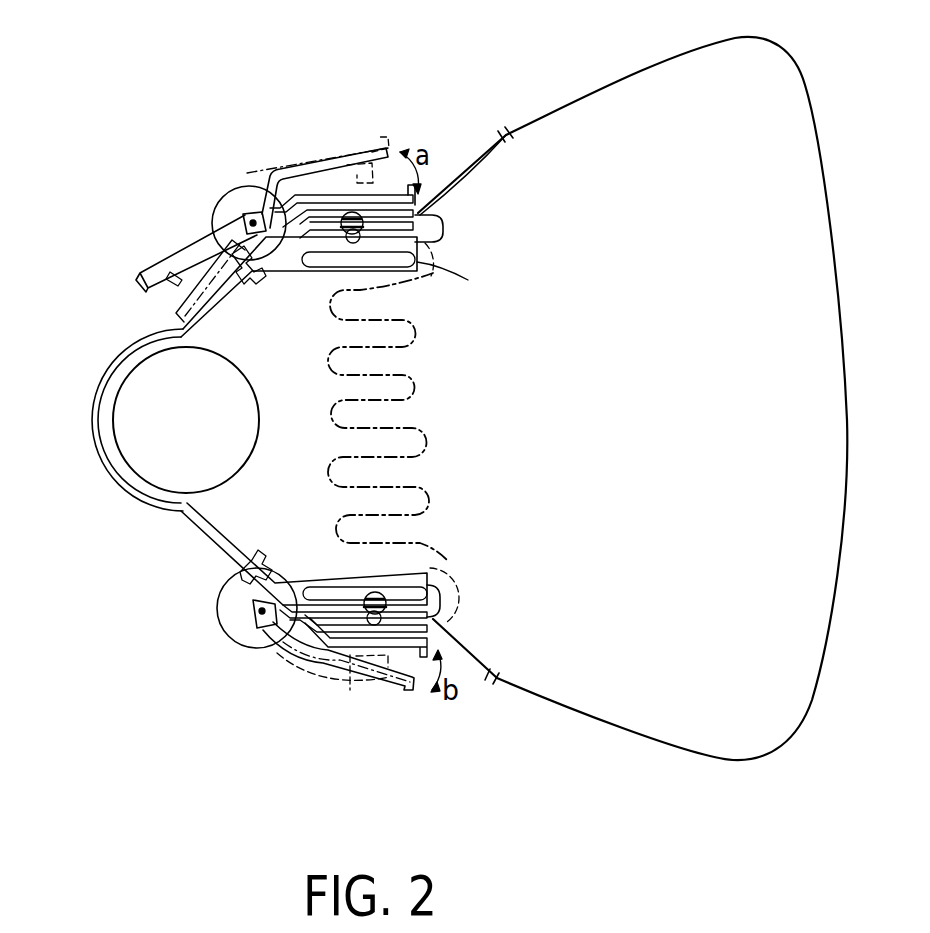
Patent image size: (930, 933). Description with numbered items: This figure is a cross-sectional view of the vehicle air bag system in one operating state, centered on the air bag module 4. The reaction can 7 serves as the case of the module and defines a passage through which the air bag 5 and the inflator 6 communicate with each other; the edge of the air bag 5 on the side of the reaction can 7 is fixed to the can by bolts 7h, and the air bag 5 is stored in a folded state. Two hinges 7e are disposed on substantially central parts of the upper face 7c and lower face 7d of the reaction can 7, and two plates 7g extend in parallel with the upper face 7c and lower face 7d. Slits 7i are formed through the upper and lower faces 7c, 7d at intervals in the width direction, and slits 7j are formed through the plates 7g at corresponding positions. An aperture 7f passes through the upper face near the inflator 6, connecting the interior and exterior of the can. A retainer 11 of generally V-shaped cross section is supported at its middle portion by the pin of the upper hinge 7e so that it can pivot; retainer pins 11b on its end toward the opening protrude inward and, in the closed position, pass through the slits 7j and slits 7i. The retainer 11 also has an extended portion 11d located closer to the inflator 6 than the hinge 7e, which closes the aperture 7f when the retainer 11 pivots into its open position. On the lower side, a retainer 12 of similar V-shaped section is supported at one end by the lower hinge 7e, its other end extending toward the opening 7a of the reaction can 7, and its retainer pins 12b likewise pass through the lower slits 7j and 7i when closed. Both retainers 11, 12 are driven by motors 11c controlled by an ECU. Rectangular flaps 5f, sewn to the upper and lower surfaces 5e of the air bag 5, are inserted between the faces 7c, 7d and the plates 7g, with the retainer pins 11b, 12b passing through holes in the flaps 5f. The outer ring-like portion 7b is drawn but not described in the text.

The air bag module 4 is at (193, 567).
The air bag 5 is at (814, 100).
The upper and lower surfaces of the air bag 5e is at (612, 78).
The flap 5f is at (418, 216).
The inflator 6 is at (112, 440).
The reaction can 7 is at (192, 524).
The opening of the reaction can 7a is at (388, 412).
The retainer ring portion 7b is at (97, 375).
The upper face of the reaction can 7c is at (430, 238).
The lower face of the reaction can 7d is at (440, 592).
The hinge 7e is at (241, 218).
The aperture 7f is at (225, 322).
The plate 7g is at (330, 220).
The bolt 7h is at (256, 290).
The slit 7i is at (316, 268).
The slit 7j is at (371, 182).
The retainer 11 is at (276, 170).
The retainer pin 11b is at (421, 246).
The motor 11c is at (243, 196).
The extended portion 11d is at (142, 273).
The retainer 12 is at (325, 662).
The retainer pin 12b is at (412, 576).